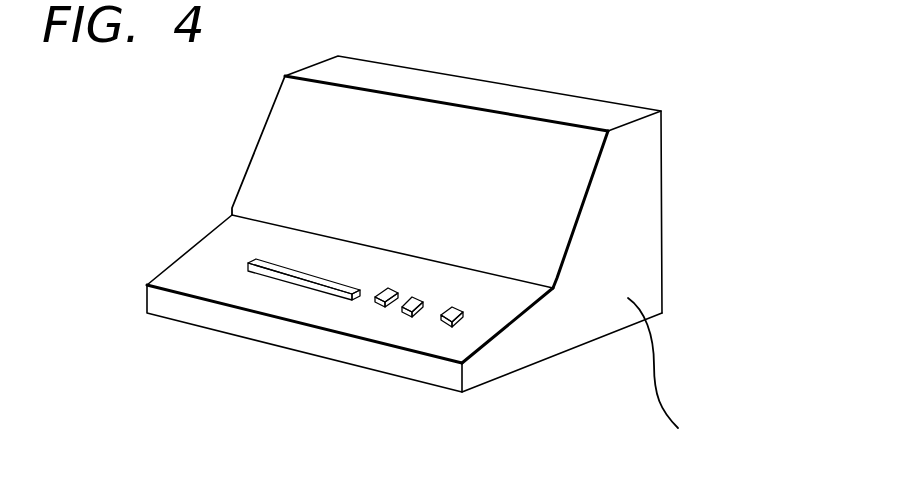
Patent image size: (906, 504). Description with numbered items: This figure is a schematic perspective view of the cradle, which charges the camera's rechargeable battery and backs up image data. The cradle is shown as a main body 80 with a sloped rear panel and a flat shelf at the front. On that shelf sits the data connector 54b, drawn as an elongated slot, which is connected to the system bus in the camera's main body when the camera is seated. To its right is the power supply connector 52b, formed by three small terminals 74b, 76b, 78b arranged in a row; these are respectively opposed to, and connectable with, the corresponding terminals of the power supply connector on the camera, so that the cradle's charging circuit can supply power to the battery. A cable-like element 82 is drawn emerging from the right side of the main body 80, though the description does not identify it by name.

The main body 80 is at (457, 70).
The cable 82 is at (644, 397).
The data connector 54b is at (288, 286).
The power supply connector 52b is at (396, 390).
The terminal 74b is at (377, 305).
The terminal 76b is at (406, 317).
The terminal 78b is at (449, 373).